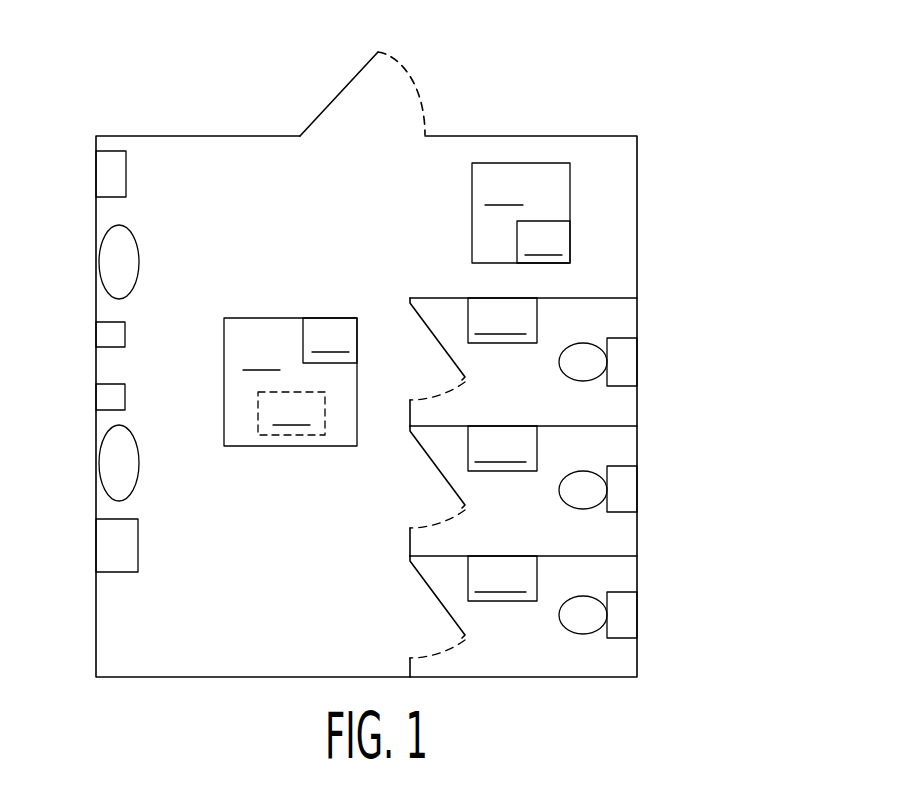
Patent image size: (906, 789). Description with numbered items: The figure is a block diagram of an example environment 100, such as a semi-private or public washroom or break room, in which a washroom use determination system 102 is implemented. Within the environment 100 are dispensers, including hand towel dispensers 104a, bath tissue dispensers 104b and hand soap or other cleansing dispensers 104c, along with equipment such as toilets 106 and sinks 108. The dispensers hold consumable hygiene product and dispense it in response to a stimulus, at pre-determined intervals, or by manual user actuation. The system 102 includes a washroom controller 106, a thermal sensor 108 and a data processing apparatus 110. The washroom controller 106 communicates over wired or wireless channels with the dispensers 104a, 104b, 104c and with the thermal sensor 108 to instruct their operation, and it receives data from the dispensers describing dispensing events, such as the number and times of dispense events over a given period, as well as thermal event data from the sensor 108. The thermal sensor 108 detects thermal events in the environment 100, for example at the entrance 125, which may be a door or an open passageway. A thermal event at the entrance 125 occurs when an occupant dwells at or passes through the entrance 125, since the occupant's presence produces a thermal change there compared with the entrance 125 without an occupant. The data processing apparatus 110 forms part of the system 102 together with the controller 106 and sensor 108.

The environment 100 is at (545, 60).
The entrance 125 is at (433, 73).
The hand towel dispenser 104a is at (126, 174).
The bath tissue dispenser 104b is at (523, 487).
The hand soap dispenser 104c is at (125, 332).
The washroom controller 106 is at (699, 613).
The thermal sensor 108 is at (139, 262).
The washroom use determination system 102 is at (436, 292).
The data processing apparatus 110 is at (521, 213).